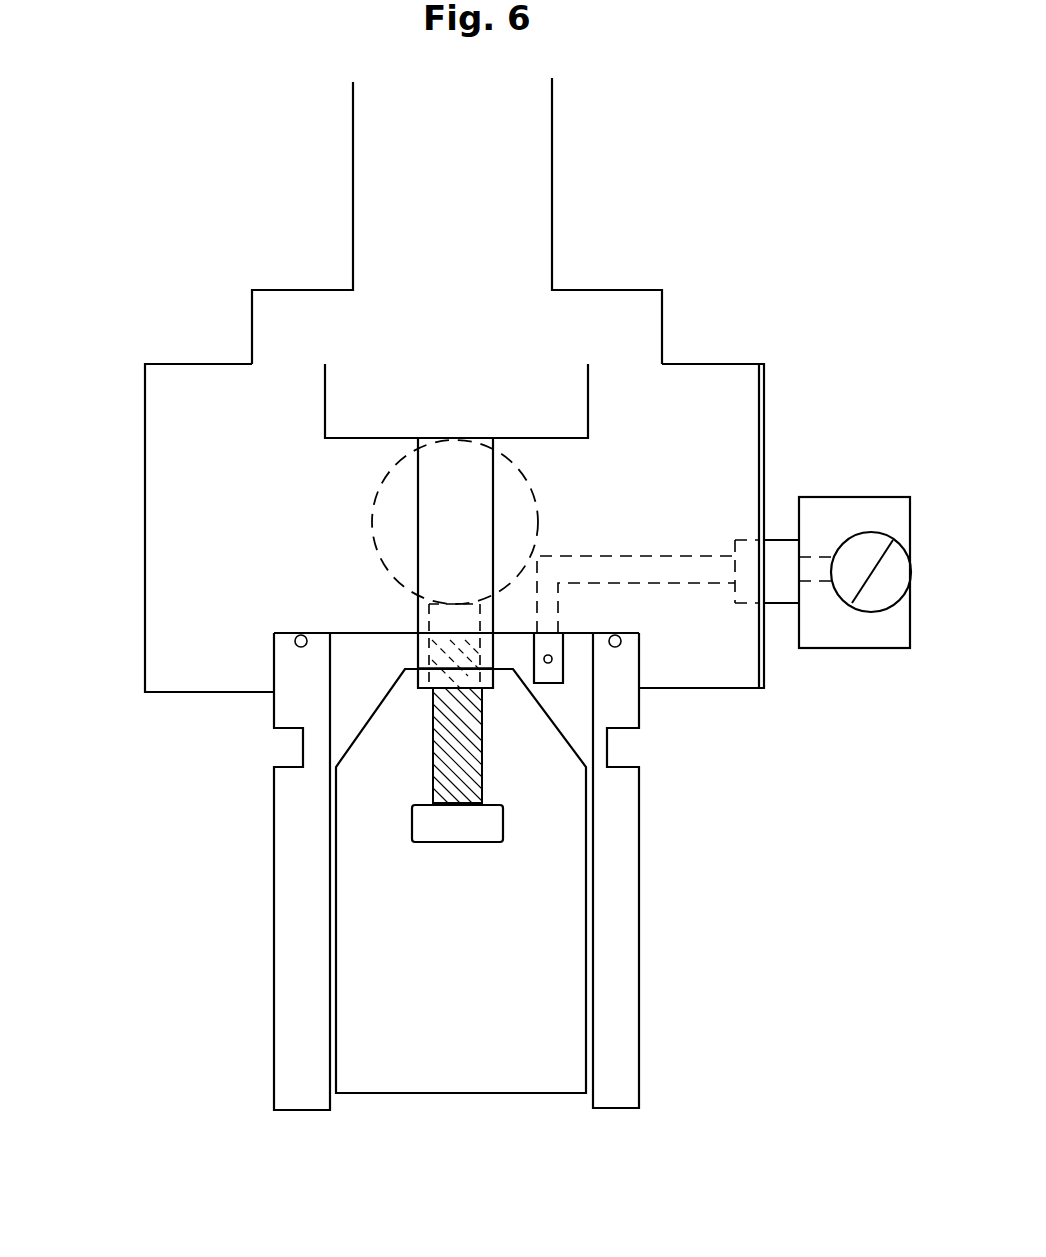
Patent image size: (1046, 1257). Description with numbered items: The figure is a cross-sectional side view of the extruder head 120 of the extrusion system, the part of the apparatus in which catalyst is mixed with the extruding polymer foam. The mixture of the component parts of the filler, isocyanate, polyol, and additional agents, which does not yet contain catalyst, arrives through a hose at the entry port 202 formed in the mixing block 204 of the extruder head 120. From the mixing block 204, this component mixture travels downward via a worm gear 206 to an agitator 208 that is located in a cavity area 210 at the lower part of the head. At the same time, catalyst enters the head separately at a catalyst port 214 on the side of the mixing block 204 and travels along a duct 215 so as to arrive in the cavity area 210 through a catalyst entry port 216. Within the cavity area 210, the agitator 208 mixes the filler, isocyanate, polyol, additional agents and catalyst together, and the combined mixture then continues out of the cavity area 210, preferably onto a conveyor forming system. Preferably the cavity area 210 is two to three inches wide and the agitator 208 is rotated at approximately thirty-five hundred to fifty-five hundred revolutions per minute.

The extruder head 120 is at (722, 258).
The entry port 202 is at (370, 500).
The mixing block 204 is at (764, 444).
The worm gear 206 is at (430, 746).
The agitator 208 is at (412, 825).
The cavity area 210 is at (512, 983).
The catalyst port 214 is at (867, 655).
The duct 215 is at (668, 587).
The catalyst entry port 216 is at (568, 677).